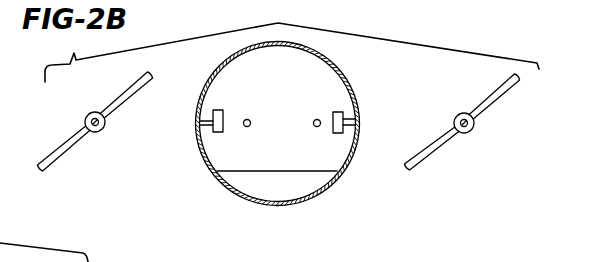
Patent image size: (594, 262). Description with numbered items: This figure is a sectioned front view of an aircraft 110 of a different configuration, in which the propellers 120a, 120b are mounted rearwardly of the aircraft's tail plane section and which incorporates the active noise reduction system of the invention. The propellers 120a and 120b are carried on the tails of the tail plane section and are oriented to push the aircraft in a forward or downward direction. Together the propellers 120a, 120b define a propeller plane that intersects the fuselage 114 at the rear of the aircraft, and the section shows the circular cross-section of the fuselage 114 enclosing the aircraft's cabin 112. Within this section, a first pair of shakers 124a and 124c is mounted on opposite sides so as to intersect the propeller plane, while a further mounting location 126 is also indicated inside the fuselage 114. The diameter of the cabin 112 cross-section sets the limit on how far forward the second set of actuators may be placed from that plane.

The fan housing assembly 110 is at (287, 76).
The cabin 112 is at (337, 86).
The fuselage 114 is at (361, 102).
The mounting hole 126 is at (250, 120).
The shaker 124a is at (338, 133).
The shaker 124c is at (217, 132).
The propeller 120a is at (488, 100).
The propeller 120b is at (123, 105).